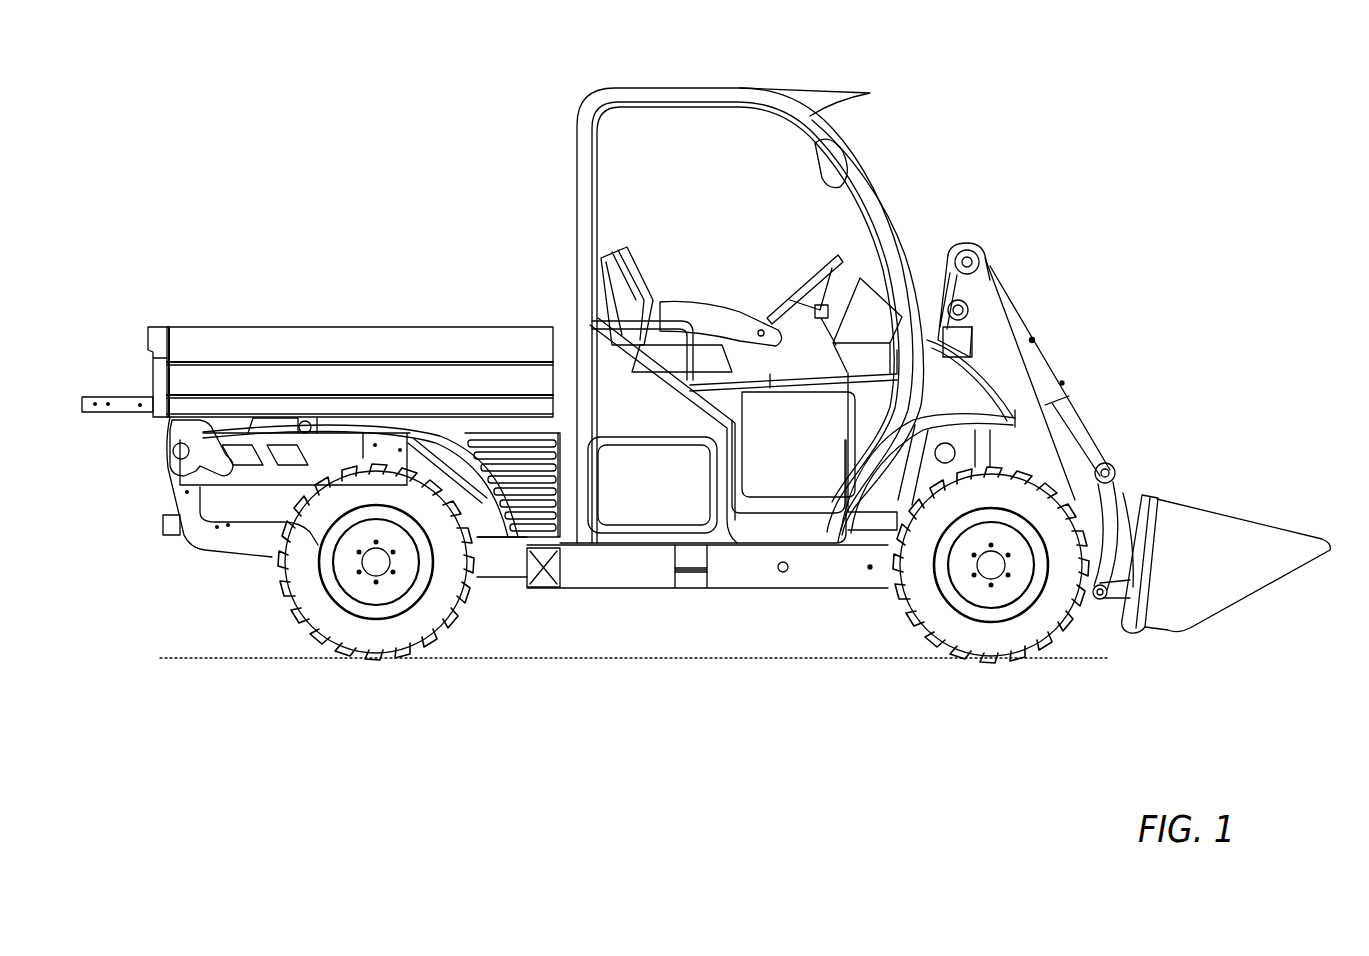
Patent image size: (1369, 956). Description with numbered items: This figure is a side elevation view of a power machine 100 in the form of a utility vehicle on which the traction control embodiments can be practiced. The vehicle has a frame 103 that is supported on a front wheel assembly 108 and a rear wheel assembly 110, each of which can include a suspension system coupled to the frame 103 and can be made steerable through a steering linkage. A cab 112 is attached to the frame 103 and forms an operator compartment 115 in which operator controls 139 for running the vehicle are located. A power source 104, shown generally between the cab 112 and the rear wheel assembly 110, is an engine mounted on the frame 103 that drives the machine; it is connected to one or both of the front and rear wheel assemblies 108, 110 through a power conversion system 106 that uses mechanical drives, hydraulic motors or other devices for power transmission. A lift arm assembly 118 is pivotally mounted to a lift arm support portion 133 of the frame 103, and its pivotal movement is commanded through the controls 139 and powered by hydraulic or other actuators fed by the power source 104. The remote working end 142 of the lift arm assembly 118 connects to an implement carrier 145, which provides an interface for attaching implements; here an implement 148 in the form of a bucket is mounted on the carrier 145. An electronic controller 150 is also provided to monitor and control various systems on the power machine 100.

The power machine 100 is at (987, 80).
The frame 103 is at (830, 575).
The power source 104 is at (364, 372).
The power conversion system 106 is at (728, 458).
The front wheel assembly 108 is at (955, 637).
The rear wheel assembly 110 is at (373, 642).
The cab 112 is at (847, 160).
The operator compartment 115 is at (668, 223).
The lift arm assembly 118 is at (1043, 332).
The lift arm support portion 133 is at (986, 258).
The operator controls 139 is at (707, 573).
The working end 142 is at (1103, 603).
The implement carrier 145 is at (1150, 622).
The implement 148 is at (1226, 564).
The electronic controller 150 is at (788, 457).